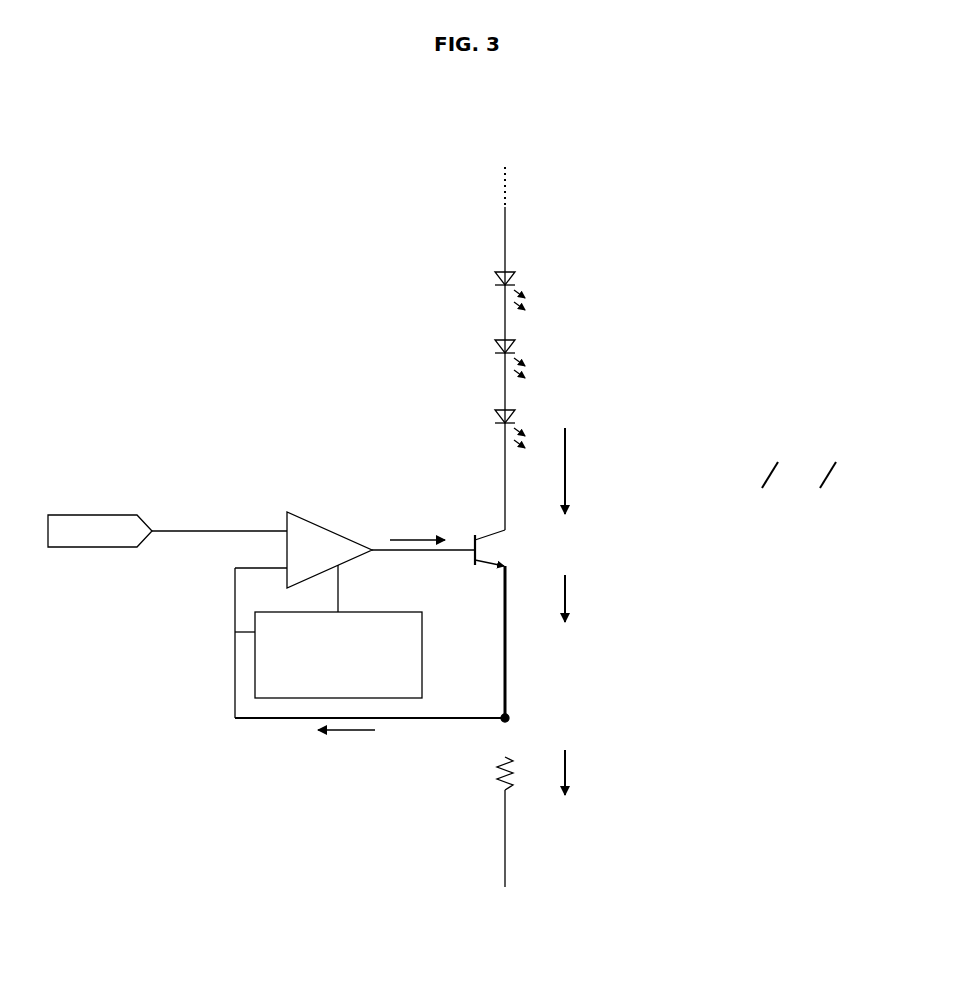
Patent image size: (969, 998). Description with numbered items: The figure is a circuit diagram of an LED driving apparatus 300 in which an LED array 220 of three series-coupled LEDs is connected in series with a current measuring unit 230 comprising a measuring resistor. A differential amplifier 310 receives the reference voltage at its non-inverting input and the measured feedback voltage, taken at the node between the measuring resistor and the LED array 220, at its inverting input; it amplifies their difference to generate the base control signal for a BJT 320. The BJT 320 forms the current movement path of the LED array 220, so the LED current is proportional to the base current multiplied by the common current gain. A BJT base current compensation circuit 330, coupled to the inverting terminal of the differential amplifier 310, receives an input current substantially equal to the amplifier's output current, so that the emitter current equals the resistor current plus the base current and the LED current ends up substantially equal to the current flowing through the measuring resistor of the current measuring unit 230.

The LED driving apparatus circuit 300 is at (464, 134).
The LED array 220 is at (545, 348).
The current measuring unit 230 is at (517, 818).
The differential amplifier 310 is at (261, 538).
The BJT 320 is at (655, 573).
The BJT base current compensation circuit 330 is at (328, 631).